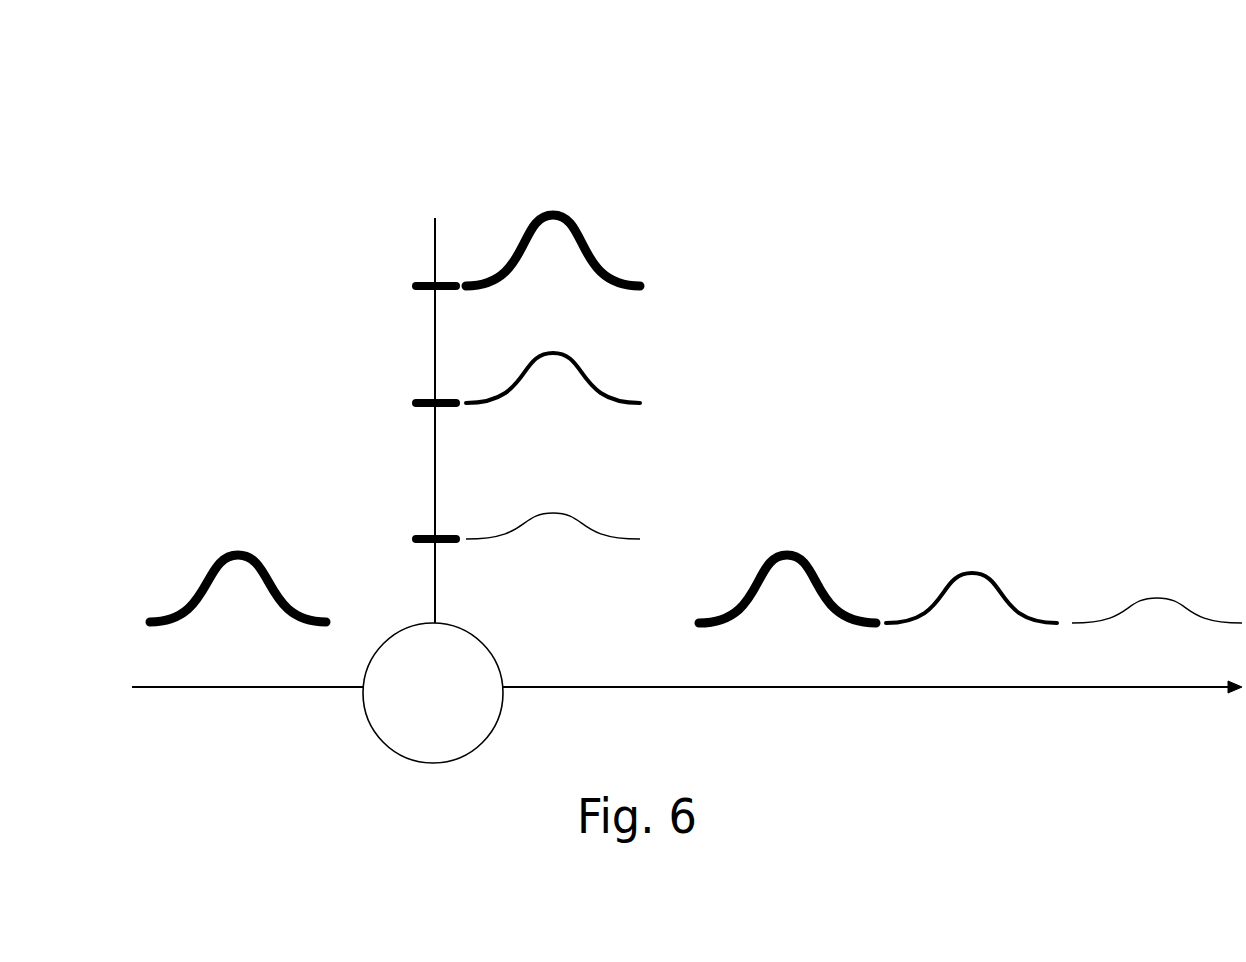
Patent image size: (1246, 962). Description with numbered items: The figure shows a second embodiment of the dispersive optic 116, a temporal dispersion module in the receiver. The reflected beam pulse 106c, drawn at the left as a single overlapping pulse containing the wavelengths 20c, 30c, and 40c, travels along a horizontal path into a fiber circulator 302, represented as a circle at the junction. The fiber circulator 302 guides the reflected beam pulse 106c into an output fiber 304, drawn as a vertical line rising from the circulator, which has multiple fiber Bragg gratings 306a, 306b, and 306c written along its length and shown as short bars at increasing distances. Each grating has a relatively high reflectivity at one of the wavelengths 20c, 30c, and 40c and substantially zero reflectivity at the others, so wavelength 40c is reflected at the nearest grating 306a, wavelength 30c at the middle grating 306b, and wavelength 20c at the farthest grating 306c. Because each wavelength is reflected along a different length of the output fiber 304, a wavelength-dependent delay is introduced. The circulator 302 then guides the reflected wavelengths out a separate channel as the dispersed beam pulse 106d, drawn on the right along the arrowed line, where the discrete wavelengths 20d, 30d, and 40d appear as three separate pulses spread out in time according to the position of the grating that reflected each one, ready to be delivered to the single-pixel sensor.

The dispersive optic 116 is at (619, 120).
The reflected beam pulse 106c is at (247, 666).
The dispersed beam pulse 106d is at (872, 669).
The fiber circulator 302 is at (433, 693).
The output fiber 304 is at (435, 404).
The fiber Bragg grating 306a is at (401, 539).
The fiber Bragg grating 306b is at (396, 413).
The fiber Bragg grating 306c is at (397, 285).
The wavelength 20c is at (172, 532).
The wavelength 30c is at (174, 557).
The wavelength 40c is at (174, 582).
The discrete wavelength 20d is at (787, 598).
The discrete wavelength 30d is at (971, 607).
The discrete wavelength 40d is at (1157, 618).